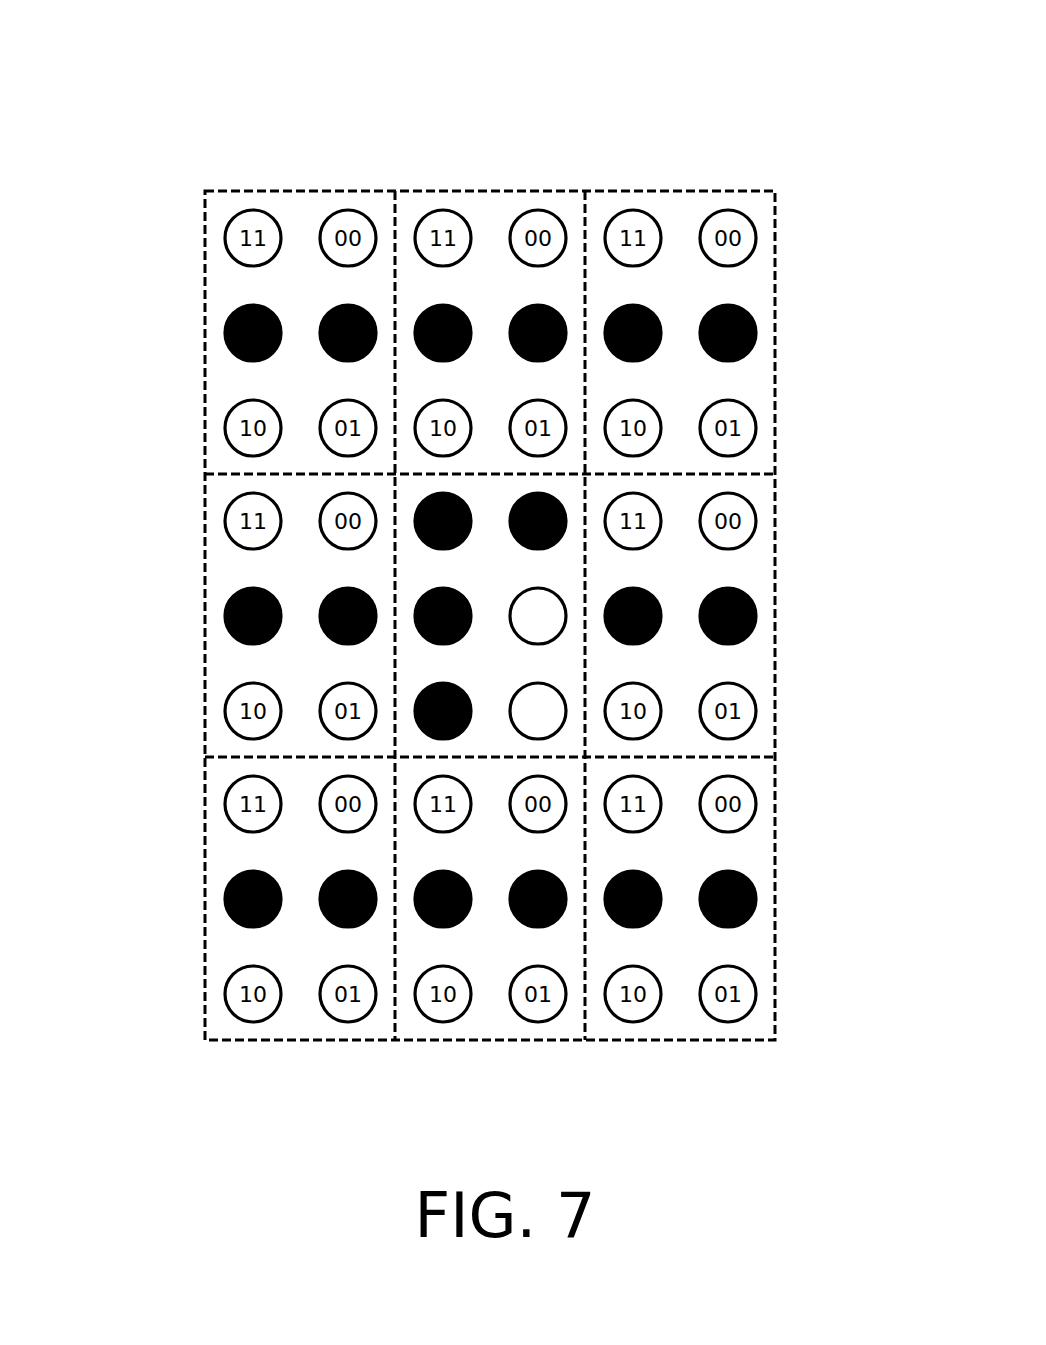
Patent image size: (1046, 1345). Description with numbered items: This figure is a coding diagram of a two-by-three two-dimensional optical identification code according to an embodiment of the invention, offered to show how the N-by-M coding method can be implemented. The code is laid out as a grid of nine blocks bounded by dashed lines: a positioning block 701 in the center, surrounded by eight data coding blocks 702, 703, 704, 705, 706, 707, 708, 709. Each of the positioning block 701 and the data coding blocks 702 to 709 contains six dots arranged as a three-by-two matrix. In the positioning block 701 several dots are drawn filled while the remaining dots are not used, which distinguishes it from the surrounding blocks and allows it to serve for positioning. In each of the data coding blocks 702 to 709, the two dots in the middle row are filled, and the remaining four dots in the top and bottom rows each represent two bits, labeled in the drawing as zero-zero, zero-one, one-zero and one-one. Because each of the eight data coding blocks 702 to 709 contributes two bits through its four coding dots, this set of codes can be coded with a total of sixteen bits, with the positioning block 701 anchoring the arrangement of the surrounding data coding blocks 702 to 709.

The positioning block 701 is at (487, 515).
The data coding block 702 is at (298, 191).
The data coding block 703 is at (553, 191).
The data coding block 704 is at (683, 191).
The data coding block 705 is at (775, 646).
The data coding block 706 is at (683, 983).
The data coding block 707 is at (488, 993).
The data coding block 708 is at (298, 972).
The data coding block 709 is at (218, 634).